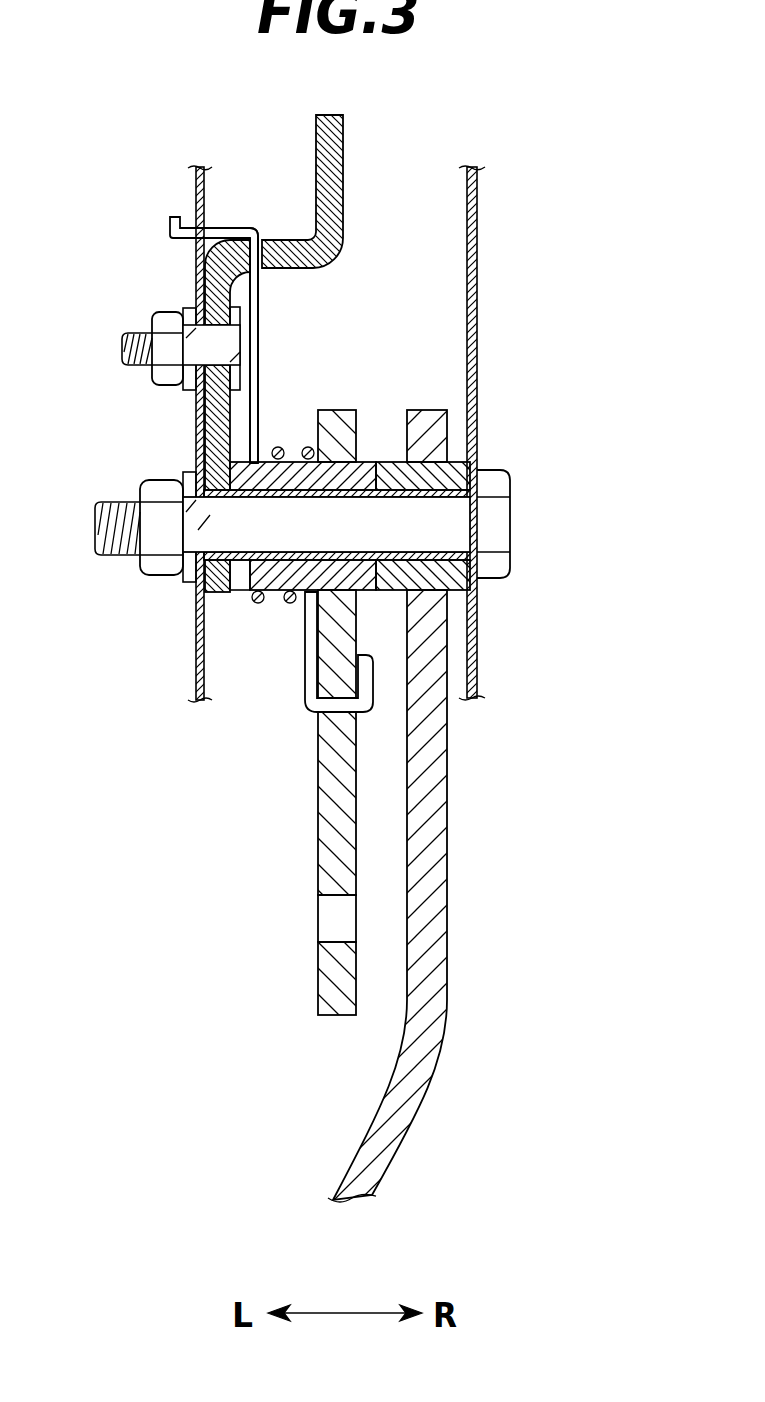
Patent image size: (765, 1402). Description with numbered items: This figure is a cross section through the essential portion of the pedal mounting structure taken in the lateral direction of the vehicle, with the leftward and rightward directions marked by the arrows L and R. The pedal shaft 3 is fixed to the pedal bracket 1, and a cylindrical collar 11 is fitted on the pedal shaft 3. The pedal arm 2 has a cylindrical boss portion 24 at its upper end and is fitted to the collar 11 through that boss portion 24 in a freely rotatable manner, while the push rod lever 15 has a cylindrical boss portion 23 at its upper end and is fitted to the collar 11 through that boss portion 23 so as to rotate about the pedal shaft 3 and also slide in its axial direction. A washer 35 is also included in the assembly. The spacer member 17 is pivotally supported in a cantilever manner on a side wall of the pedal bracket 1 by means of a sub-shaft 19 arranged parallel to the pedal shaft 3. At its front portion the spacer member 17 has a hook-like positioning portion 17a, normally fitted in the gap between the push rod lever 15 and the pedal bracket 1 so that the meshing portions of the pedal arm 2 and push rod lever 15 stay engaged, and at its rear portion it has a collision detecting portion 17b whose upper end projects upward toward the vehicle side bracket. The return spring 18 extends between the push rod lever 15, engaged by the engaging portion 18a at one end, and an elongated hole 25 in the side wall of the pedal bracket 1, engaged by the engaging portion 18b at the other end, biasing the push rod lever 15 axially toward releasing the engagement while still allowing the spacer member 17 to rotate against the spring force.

The pedal bracket 1 is at (478, 272).
The pedal arm 2 is at (405, 1097).
The pedal shaft 3 is at (497, 530).
The collar 11 is at (455, 497).
The push rod lever 15 is at (318, 872).
The spacer member 17 is at (323, 408).
The positioning portion 17a is at (228, 592).
The collision detecting portion 17b is at (345, 150).
The return spring 18 is at (259, 282).
The engaging portion 18a is at (315, 705).
The engaging portion 18b is at (170, 228).
The sub-shaft 19 is at (262, 324).
The boss portion 23 is at (376, 462).
The boss portion 24 is at (392, 462).
The elongated hole 25 is at (210, 228).
The washer 35 is at (258, 603).